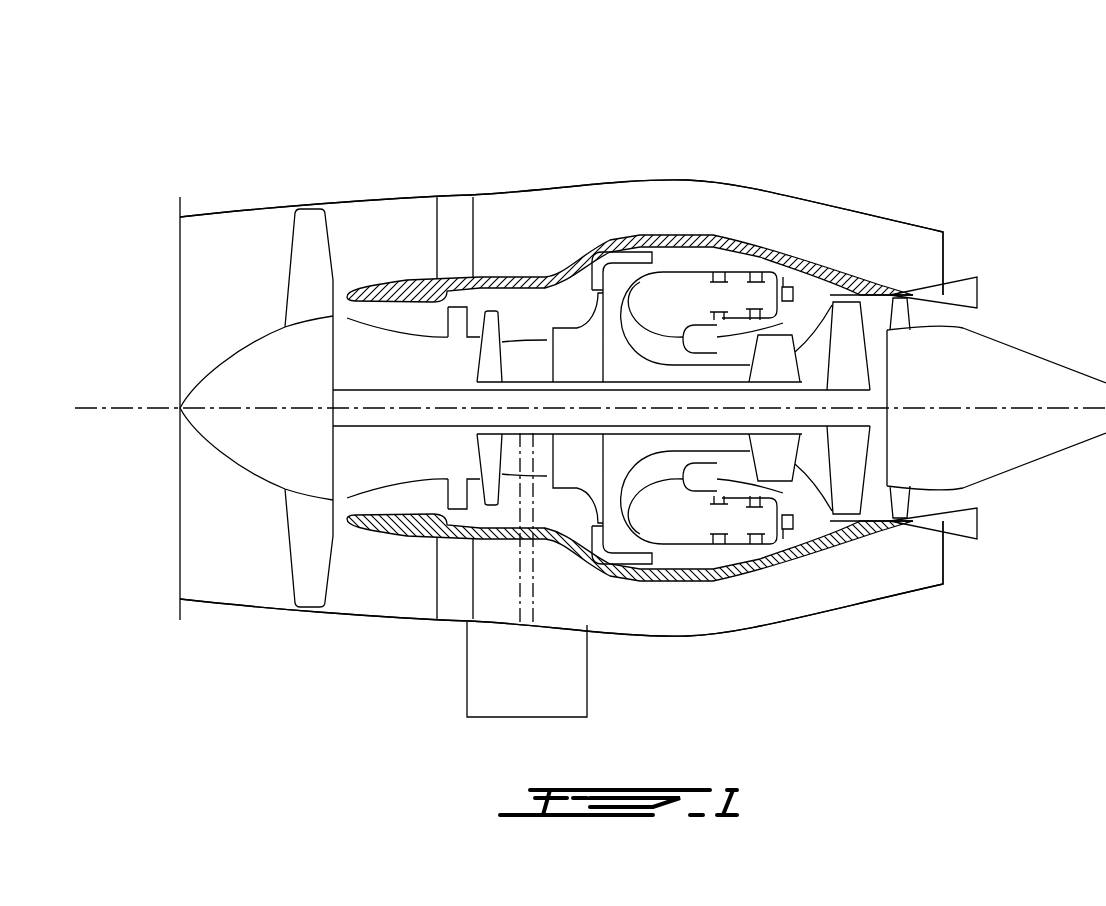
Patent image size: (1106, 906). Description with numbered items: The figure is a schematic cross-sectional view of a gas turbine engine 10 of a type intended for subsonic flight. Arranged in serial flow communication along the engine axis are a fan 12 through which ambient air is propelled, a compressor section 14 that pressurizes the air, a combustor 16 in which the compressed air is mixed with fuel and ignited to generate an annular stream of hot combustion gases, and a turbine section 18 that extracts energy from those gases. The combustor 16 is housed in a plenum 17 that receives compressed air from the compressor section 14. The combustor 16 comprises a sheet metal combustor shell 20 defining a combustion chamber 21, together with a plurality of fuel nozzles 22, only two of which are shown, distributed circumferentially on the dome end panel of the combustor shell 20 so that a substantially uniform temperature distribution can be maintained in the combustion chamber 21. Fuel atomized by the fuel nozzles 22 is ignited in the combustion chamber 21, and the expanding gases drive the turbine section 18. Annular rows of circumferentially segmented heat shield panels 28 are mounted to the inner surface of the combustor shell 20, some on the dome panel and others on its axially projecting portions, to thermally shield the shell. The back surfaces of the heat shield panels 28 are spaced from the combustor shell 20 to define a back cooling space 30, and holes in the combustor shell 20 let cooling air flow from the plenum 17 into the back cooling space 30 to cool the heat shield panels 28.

The gas turbine engine 10 is at (835, 130).
The fan 12 is at (305, 537).
The compressor section 14 is at (517, 323).
The combustor 16 is at (688, 278).
The plenum 17 is at (726, 262).
The turbine section 18 is at (817, 457).
The combustor shell 20 is at (717, 540).
The combustion chamber 21 is at (706, 532).
The fuel nozzles 22 is at (787, 292).
The heat shield panels 28 is at (770, 290).
The back cooling space 30 is at (630, 300).